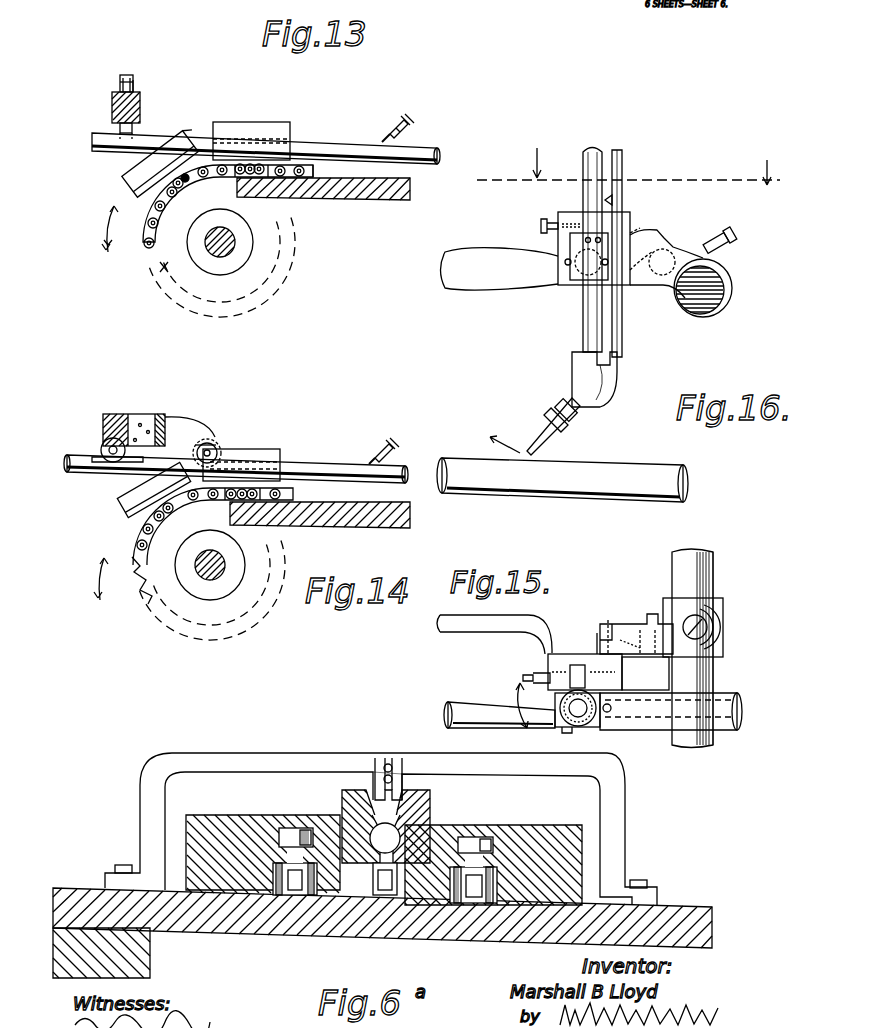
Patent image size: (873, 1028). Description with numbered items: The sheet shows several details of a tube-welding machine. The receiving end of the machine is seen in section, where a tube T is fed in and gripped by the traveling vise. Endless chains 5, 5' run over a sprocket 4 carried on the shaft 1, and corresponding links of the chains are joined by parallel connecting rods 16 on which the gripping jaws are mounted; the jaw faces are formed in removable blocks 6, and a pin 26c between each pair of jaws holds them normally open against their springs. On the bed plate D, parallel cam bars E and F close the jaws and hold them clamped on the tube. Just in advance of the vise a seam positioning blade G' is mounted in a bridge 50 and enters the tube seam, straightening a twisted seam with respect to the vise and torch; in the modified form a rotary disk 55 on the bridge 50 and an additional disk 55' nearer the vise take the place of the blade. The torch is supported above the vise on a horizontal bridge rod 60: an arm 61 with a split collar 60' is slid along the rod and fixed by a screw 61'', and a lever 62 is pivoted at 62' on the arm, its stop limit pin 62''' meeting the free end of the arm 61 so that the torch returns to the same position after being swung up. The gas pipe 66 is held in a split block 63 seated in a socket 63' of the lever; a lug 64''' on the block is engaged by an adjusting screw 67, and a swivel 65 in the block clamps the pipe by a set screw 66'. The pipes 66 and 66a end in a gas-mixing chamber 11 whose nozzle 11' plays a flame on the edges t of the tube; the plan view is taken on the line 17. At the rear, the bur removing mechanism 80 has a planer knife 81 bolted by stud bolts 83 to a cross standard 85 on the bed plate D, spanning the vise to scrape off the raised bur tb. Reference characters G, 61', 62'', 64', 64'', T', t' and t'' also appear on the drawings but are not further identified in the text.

In FIG. 13, the shaft 1 is at (233, 237).
In FIG. 14, the shaft 1 is at (207, 573).
In FIG. 13, the sprocket 4 is at (165, 270).
In FIG. 14, the sprocket 4 is at (148, 570).
In FIG. 13, the endless chain 5 is at (123, 244).
In FIG. 14, the endless chain 5 is at (117, 563).
In FIG. 6a, the endless chain 5 is at (284, 905).
In FIG. 6a, the endless chain 5' is at (470, 924).
In FIG. 13, the gripping block 6 is at (148, 195).
In FIG. 14, the gripping block 6 is at (128, 503).
In FIG. 13, the connecting rod 16 is at (183, 190).
In FIG. 14, the connecting rod 16 is at (213, 526).
In FIG. 6a, the connecting rod 16 is at (388, 895).
In FIG. 13, the pin 26c is at (185, 183).
In FIG. 13, the bridge 50 is at (112, 102).
In FIG. 14, the bridge 50 is at (126, 414).
In FIG. 14, the disk 55 is at (106, 440).
In FIG. 14, the disk or wheel 55' is at (210, 423).
In FIG. 16, the gas-mixing chamber 11 is at (617, 367).
In FIG. 13, the flame nozzle 11' is at (414, 128).
In FIG. 14, the flame nozzle 11' is at (397, 452).
In FIG. 16, the flame nozzle 11' is at (550, 426).
In FIG. 16, the section line 17 is at (640, 174).
In FIG. 16, the bridge rod 60 is at (707, 304).
In FIG. 15, the bridge rod 60 is at (719, 648).
In FIG. 16, the split collar 60' is at (723, 288).
In FIG. 16, the arm 61 is at (666, 256).
In FIG. 15, the arm 61 is at (707, 642).
In FIG. 15, the block 61' is at (645, 673).
In FIG. 16, the screw 61'' is at (734, 240).
In FIG. 15, the screw 61'' is at (725, 627).
In FIG. 16, the lever 62 is at (501, 291).
In FIG. 16, the pivot 62' is at (668, 353).
In FIG. 15, the pivot 62' is at (636, 629).
In FIG. 16, the pin 62'' is at (656, 220).
In FIG. 15, the pin 62'' is at (642, 612).
In FIG. 16, the stop limit pin 62''' is at (651, 283).
In FIG. 16, the split block 63 is at (582, 279).
In FIG. 15, the socket 63' is at (494, 636).
In FIG. 15, the body block 64' is at (585, 644).
In FIG. 15, the rod 64'' is at (610, 615).
In FIG. 15, the lug 64''' is at (633, 598).
In FIG. 16, the swivel 65 is at (570, 212).
In FIG. 15, the swivel 65 is at (546, 732).
In FIG. 16, the gas supply pipe 66 is at (595, 265).
In FIG. 15, the gas supply pipe 66 is at (599, 708).
In FIG. 16, the set screw 66' is at (655, 253).
In FIG. 15, the set screw 66' is at (573, 747).
In FIG. 16, the gas supply pipe 66a is at (629, 183).
In FIG. 15, the gas supply pipe 66a is at (609, 712).
In FIG. 15, the adjusting screw 67 is at (540, 672).
In FIG. 6a, the bur removing mechanism 80 is at (355, 743).
In FIG. 6a, the planer knife 81 is at (378, 766).
In FIG. 6a, the stud bolt 83 is at (388, 758).
In FIG. 6a, the cross standard 85 is at (180, 757).
In FIG. 13, the bed plate D is at (347, 200).
In FIG. 14, the bed plate D is at (320, 515).
In FIG. 6a, the bed plate D is at (353, 932).
In FIG. 6a, the cam bar E is at (217, 823).
In FIG. 6a, the cam bar F is at (541, 828).
In FIG. 13, the guide G is at (145, 72).
In FIG. 14, the guide G is at (229, 424).
In FIG. 13, the seam positioning blade G' is at (111, 67).
In FIG. 13, the tube T is at (264, 149).
In FIG. 14, the tube T is at (236, 476).
In FIG. 16, the tube T' is at (562, 496).
In FIG. 15, the tube T' is at (684, 711).
In FIG. 6a, the tube edge t is at (423, 724).
In FIG. 15, the tube t' is at (499, 709).
In FIG. 15, the tube t'' is at (453, 744).
In FIG. 6a, the bur tb is at (403, 838).